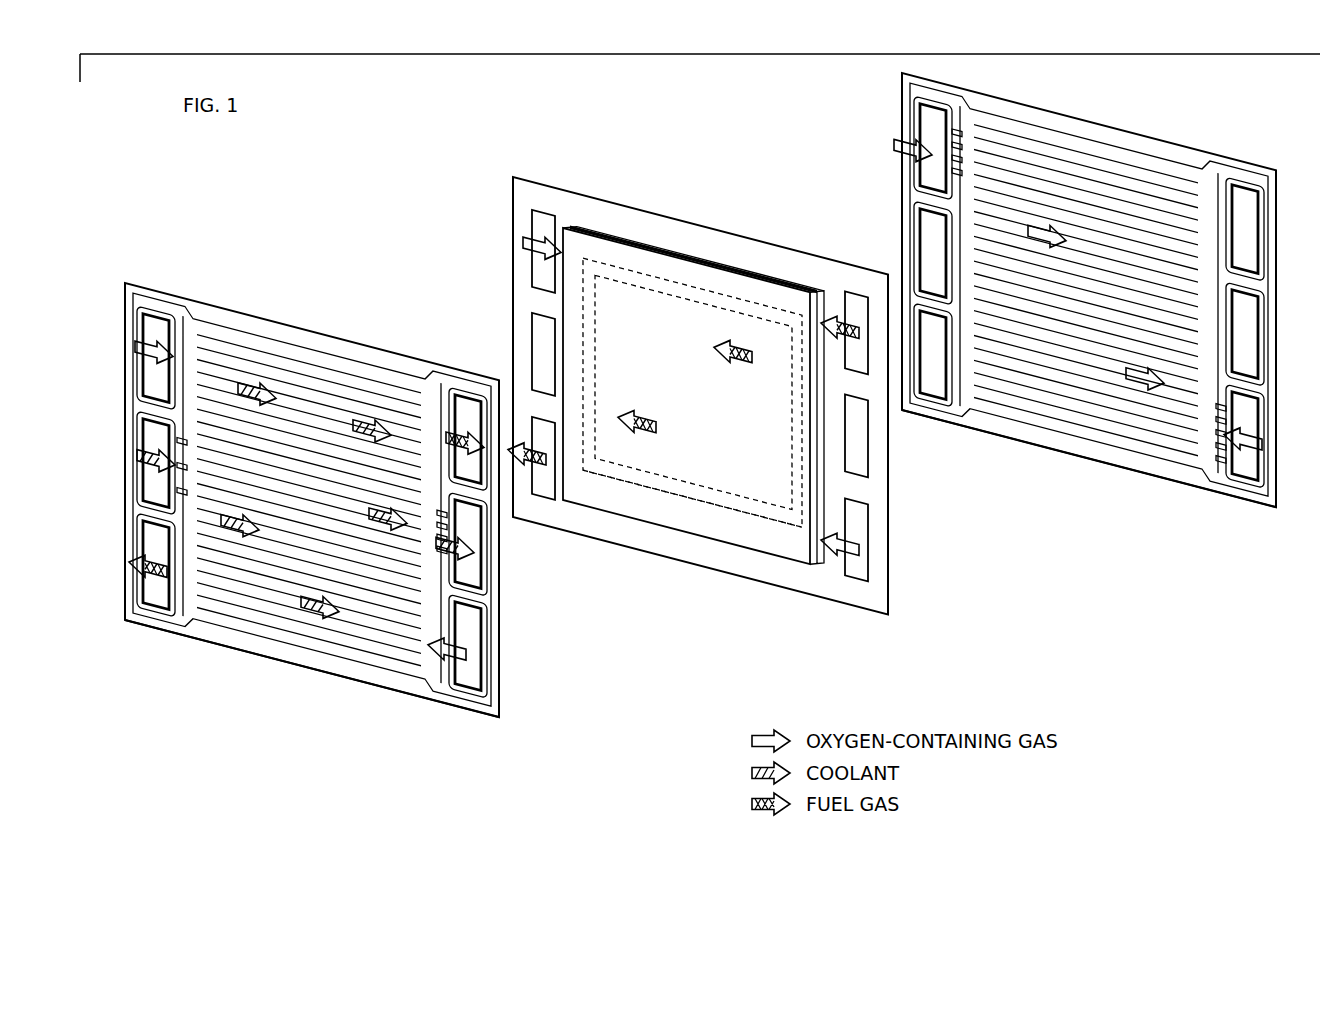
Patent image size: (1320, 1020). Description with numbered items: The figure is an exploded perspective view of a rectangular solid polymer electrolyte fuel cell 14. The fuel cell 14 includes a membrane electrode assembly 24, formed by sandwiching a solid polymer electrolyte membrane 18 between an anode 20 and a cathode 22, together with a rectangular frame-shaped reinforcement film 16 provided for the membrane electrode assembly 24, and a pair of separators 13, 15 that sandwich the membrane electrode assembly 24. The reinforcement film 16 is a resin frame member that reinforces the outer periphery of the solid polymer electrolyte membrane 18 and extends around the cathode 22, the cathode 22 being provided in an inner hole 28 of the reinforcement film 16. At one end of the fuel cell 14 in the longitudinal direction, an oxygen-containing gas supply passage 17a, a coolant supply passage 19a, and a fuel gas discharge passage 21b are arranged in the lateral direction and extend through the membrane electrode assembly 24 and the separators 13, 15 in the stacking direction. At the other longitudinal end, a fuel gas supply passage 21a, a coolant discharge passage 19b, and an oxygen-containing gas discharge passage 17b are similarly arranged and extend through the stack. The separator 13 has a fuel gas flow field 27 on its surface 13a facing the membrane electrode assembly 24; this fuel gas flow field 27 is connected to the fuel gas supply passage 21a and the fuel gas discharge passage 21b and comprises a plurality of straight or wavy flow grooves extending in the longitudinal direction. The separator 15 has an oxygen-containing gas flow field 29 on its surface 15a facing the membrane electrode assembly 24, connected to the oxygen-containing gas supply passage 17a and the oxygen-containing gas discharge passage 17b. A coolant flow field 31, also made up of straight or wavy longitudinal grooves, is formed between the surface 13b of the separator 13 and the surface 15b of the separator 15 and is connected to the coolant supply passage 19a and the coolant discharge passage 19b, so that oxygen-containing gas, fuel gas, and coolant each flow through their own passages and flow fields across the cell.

The separator 13 is at (123, 278).
The surface 13a is at (353, 668).
The surface 13b is at (305, 660).
The fuel cell 14 is at (286, 163).
The separator 15 is at (893, 82).
The surface 15a is at (1068, 440).
The surface 15b is at (1122, 456).
The reinforcement film 16 is at (663, 543).
The oxygen-containing gas supply passage 17a is at (148, 333).
The oxygen-containing gas discharge passage 17b is at (470, 678).
The solid polymer electrolyte membrane 18 is at (671, 248).
The coolant supply passage 19a is at (153, 432).
The coolant discharge passage 19b is at (482, 576).
The anode 20 is at (733, 285).
The fuel gas supply passage 21a is at (468, 412).
The fuel gas discharge passage 21b is at (157, 590).
The cathode 22 is at (627, 283).
The membrane electrode assembly 24 is at (505, 178).
The fuel gas flow field 27 is at (290, 387).
The inner hole 28 is at (766, 514).
The oxygen-containing gas flow field 29 is at (1098, 190).
The coolant flow field 31 is at (243, 607).